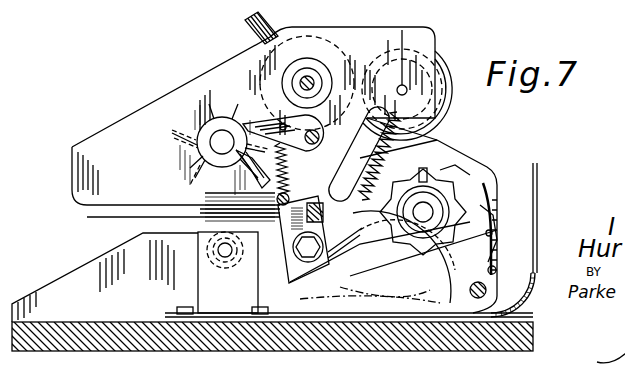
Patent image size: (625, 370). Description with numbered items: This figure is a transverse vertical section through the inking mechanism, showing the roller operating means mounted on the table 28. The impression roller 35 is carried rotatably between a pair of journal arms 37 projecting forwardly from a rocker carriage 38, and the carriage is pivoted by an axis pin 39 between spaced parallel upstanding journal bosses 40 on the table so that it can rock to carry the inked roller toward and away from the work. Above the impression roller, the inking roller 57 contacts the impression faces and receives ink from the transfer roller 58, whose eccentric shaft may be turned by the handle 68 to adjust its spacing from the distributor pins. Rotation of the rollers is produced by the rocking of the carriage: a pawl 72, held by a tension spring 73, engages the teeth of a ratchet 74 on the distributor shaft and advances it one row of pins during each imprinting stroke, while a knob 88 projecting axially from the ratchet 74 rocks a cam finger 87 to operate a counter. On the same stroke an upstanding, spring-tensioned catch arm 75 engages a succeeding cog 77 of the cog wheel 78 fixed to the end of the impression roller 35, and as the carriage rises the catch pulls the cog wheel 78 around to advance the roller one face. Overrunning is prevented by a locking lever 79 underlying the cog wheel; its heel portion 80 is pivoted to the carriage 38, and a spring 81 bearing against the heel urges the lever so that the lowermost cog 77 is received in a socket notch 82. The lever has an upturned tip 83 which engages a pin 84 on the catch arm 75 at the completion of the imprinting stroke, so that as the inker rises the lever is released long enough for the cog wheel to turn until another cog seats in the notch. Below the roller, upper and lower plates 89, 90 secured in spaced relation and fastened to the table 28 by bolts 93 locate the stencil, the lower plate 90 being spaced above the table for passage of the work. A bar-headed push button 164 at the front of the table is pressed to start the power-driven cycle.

The push button 164 is at (108, 6).
The handle 68 is at (262, 34).
The transfer roller 58 is at (320, 40).
The inking roller 57 is at (444, 70).
The ratchet 74 is at (215, 122).
The knob 88 is at (222, 142).
The cam finger 87 is at (200, 152).
The pawl 72 is at (298, 116).
The tension spring 73 is at (296, 177).
The spring 81 is at (353, 164).
The cog wheel 78 is at (433, 176).
The cog 77 is at (423, 203).
The impression roller 35 is at (440, 170).
The upturned tip 83 is at (445, 178).
The catch arm 75 is at (497, 222).
The pin 84 is at (500, 220).
The lower plate 90 is at (492, 320).
The table 28 is at (40, 325).
The axis pin 39 is at (225, 252).
The heel portion 80 is at (260, 265).
The bolts 93 is at (188, 307).
The rocker carriage 38 is at (265, 221).
The journal arms 37 is at (290, 281).
The journal bosses 40 is at (310, 299).
The locking lever 79 is at (343, 270).
The upper plate 89 is at (407, 273).
The socket notch 82 is at (472, 293).